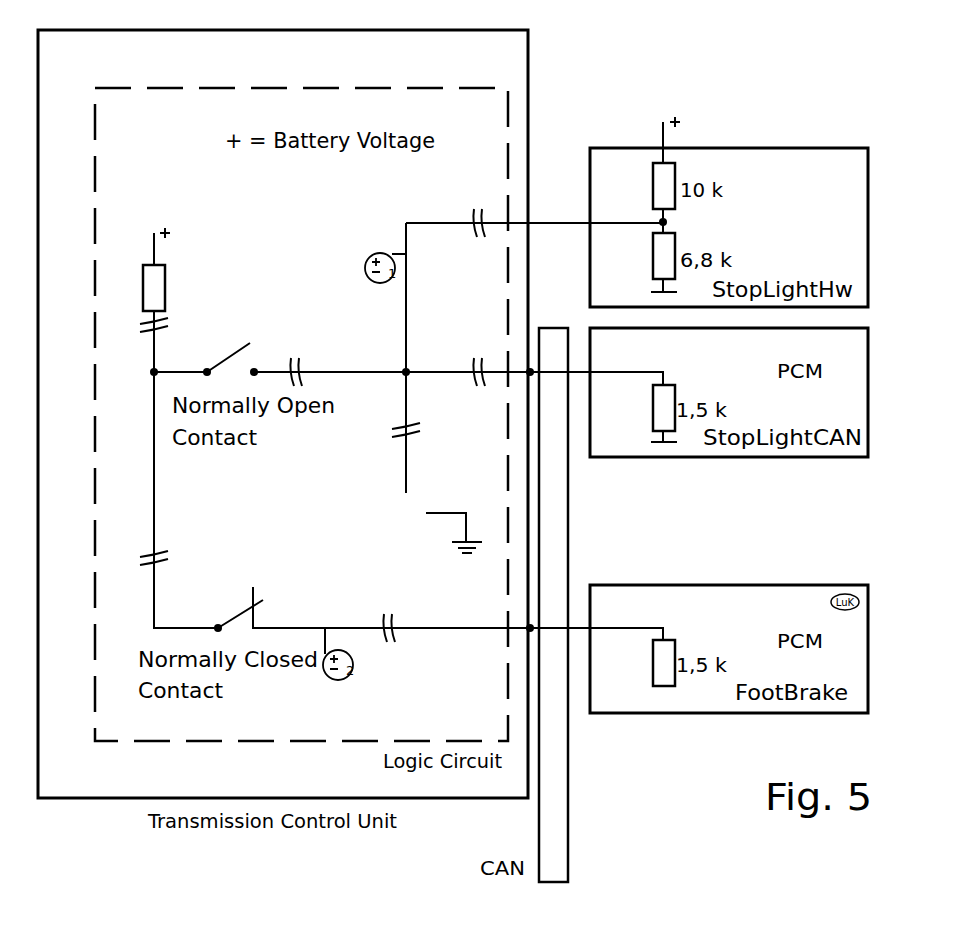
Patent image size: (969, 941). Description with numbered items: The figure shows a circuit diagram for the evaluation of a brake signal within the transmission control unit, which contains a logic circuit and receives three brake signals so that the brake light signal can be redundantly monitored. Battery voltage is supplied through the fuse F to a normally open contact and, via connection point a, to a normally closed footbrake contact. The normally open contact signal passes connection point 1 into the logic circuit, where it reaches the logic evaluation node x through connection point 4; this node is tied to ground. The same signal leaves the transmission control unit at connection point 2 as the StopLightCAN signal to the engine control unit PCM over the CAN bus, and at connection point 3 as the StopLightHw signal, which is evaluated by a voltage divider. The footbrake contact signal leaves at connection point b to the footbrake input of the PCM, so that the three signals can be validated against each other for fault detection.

The fuse F is at (171, 303).
The connection point 1 is at (302, 353).
The connection point 2 is at (484, 353).
The connection point 3 is at (485, 204).
The connection point 4 is at (423, 430).
The connection point a is at (172, 558).
The connection point b is at (393, 610).
The logic evaluation node x is at (406, 513).